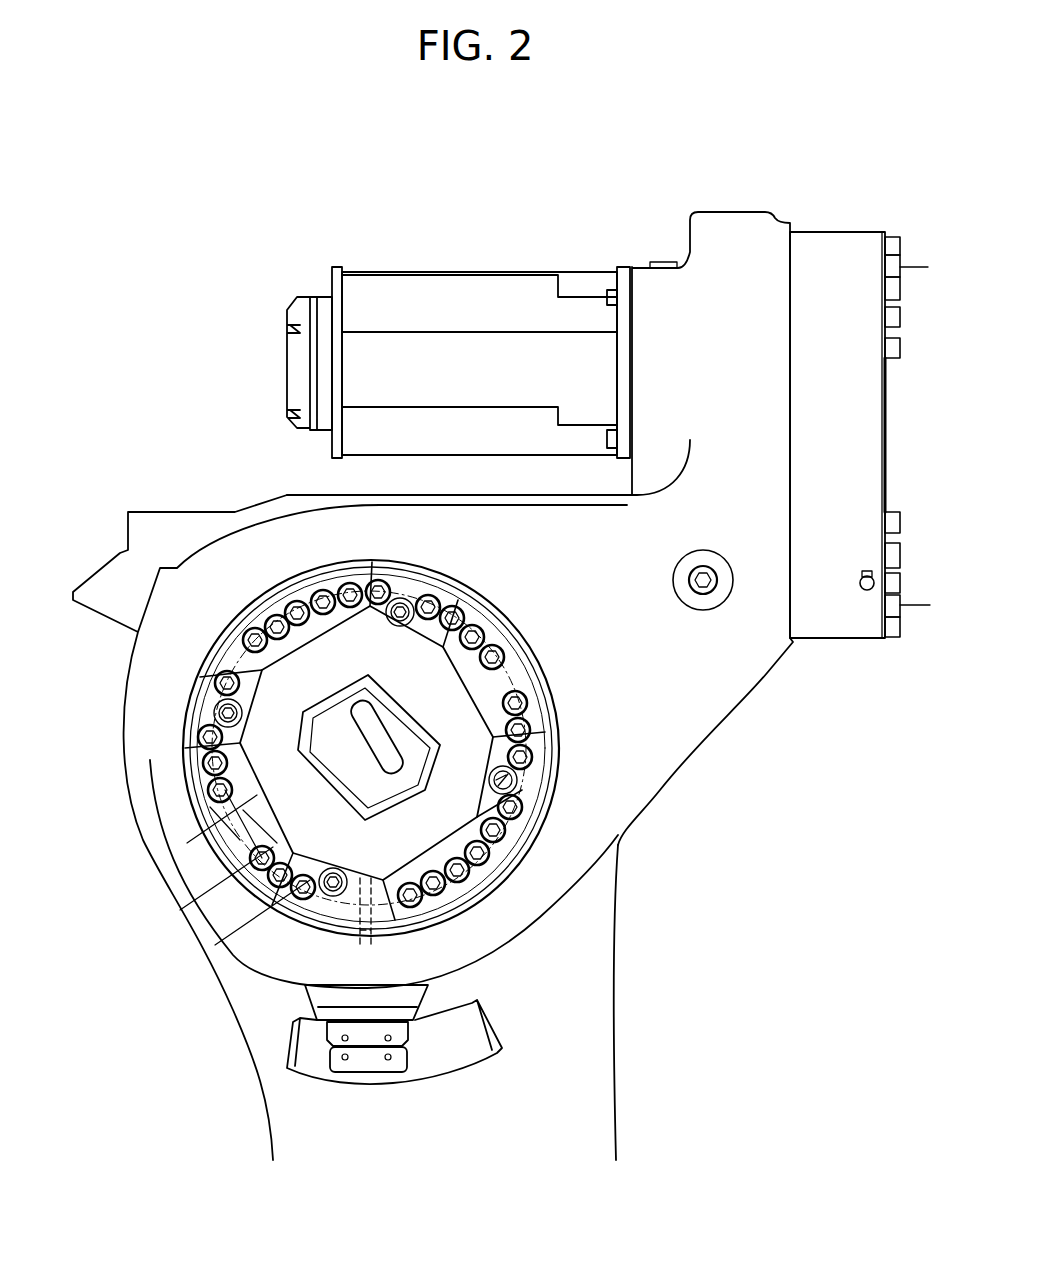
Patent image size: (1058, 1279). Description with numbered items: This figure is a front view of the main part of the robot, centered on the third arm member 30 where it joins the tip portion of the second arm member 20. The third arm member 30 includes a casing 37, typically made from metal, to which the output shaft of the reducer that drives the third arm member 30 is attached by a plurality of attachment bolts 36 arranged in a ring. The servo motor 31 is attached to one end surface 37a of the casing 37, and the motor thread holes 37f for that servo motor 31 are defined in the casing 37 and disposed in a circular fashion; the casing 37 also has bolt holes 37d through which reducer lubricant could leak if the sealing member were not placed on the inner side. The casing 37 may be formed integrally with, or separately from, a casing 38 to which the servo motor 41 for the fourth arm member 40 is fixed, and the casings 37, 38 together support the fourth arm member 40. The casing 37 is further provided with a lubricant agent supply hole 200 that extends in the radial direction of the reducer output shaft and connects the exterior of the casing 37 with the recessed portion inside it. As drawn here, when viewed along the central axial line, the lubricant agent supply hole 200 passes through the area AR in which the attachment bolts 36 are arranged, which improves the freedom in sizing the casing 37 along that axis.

The second arm member 20 is at (620, 1046).
The third arm member 30 is at (728, 212).
The servo motor 31 is at (262, 818).
The attachment bolts 36 is at (262, 628).
The casing 37 is at (150, 688).
The one end surface 37a is at (540, 790).
The bolt holes 37d is at (308, 592).
The motor thread holes 37f is at (401, 598).
The casing 38 is at (722, 267).
The fourth arm member 40 is at (915, 267).
The servo motor 41 is at (456, 268).
The lubricant agent supply hole 200 is at (370, 950).
The area AR is at (303, 923).